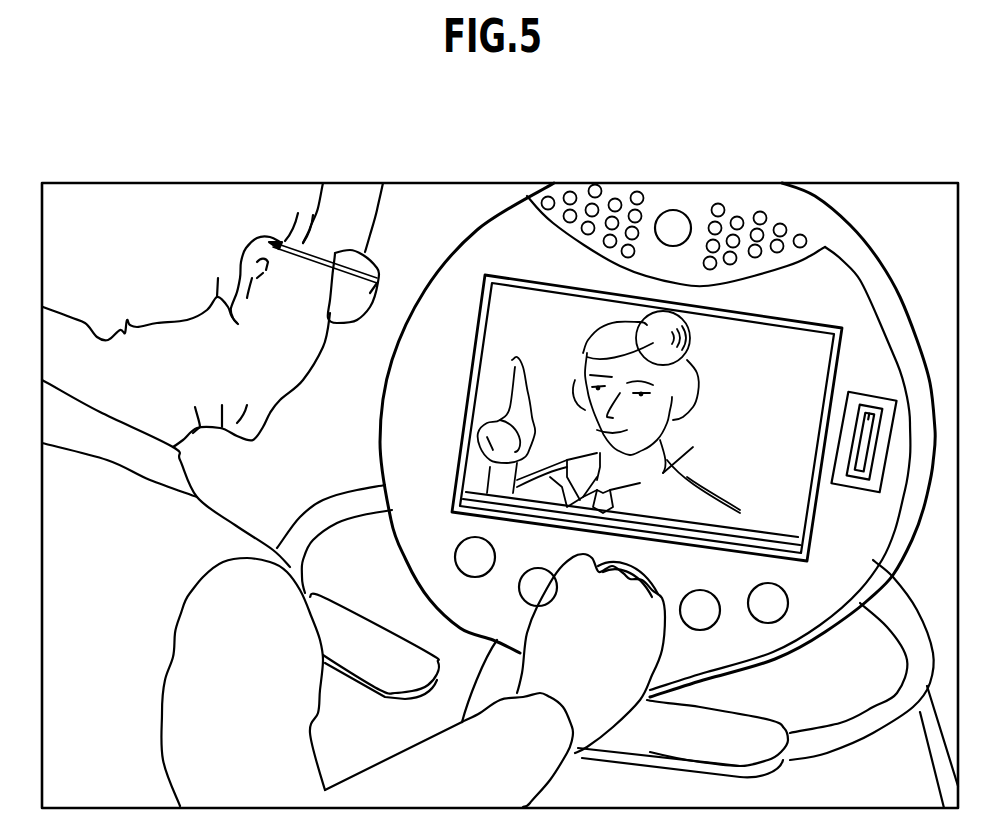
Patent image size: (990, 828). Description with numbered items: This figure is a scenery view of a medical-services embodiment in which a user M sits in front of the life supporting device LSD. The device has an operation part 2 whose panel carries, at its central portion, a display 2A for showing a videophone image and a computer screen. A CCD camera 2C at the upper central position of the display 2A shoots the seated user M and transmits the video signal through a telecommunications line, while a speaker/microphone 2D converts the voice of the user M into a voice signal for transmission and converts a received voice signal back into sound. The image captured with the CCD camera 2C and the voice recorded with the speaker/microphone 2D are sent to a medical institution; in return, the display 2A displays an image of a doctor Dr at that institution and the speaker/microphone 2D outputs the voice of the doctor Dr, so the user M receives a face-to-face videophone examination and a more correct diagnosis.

The life supporting device LSD is at (466, 210).
The display 2A is at (515, 303).
The speaker/microphone 2D is at (625, 196).
The CCD camera 2C is at (667, 211).
The operation part 2 is at (333, 270).
The user M is at (280, 466).
The doctor Dr is at (726, 441).